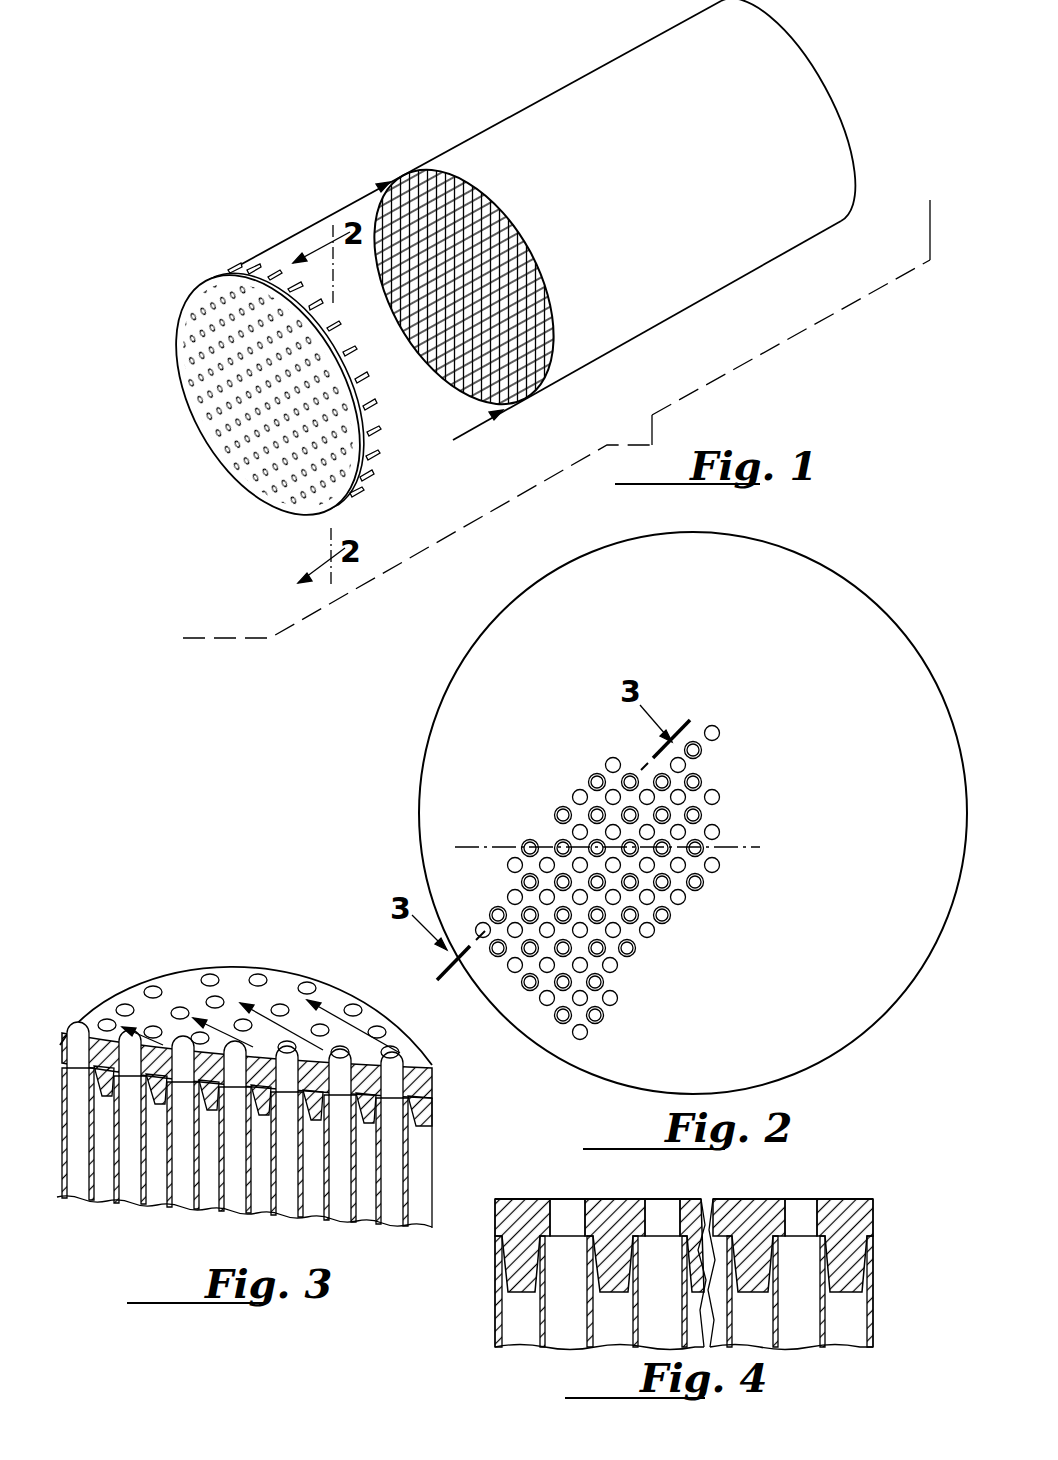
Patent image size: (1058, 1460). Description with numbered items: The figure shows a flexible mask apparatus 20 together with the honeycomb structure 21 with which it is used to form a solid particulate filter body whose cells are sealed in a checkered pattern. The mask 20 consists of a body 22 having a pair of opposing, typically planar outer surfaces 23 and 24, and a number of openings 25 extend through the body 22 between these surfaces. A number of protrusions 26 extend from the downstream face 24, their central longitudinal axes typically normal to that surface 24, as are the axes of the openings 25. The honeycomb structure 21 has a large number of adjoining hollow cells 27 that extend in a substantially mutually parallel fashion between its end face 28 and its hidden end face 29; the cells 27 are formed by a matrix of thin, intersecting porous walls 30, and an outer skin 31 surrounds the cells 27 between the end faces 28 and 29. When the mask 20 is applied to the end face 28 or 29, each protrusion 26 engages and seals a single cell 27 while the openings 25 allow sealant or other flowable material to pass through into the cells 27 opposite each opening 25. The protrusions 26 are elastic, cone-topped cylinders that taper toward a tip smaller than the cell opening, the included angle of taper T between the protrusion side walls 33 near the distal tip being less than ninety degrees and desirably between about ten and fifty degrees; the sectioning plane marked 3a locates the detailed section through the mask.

In FIG. 1, the mask apparatus 20 is at (190, 410).
In FIG. 2, the mask apparatus 20 is at (422, 770).
In FIG. 1, the honeycomb structure 21 is at (660, 323).
In FIG. 3, the honeycomb structure 21 is at (190, 1203).
In FIG. 1, the body 22 is at (363, 437).
In FIG. 3, the body 22 is at (432, 1076).
In FIG. 1, the outer surface 23 is at (242, 437).
In FIG. 3, the outer surface 23 is at (235, 982).
In FIG. 4, the outer surface 23 is at (748, 1199).
In FIG. 1, the outer surface 24 is at (282, 276).
In FIG. 2, the outer surface 24 is at (785, 674).
In FIG. 3, the outer surface 24 is at (62, 1060).
In FIG. 4, the outer surface 24 is at (684, 1273).
In FIG. 1, the openings 25 is at (250, 313).
In FIG. 2, the openings 25 is at (678, 797).
In FIG. 3, the openings 25 is at (133, 1047).
In FIG. 4, the openings 25 is at (566, 1215).
In FIG. 1, the protrusions 26 is at (348, 334).
In FIG. 2, the protrusions 26 is at (563, 815).
In FIG. 3, the protrusions 26 is at (433, 1118).
In FIG. 4, the protrusions 26 is at (618, 1268).
In FIG. 1, the cells 27 is at (447, 185).
In FIG. 3, the cells 27 is at (392, 1180).
In FIG. 4, the cells 27 is at (562, 1313).
In FIG. 1, the end face 28 is at (427, 365).
In FIG. 3, the end face 28 is at (128, 1066).
In FIG. 1, the end face 29 is at (832, 70).
In FIG. 1, the walls 30 is at (535, 270).
In FIG. 3, the walls 30 is at (365, 1222).
In FIG. 4, the walls 30 is at (780, 1330).
In FIG. 1, the outer skin 31 is at (585, 120).
In FIG. 3, the outer skin 31 is at (433, 1156).
In FIG. 4, the protrusion side walls 33 is at (862, 1280).
In FIG. 4, the included angle of taper T is at (875, 1247).
In FIG. 2, the section line 3a is at (745, 852).